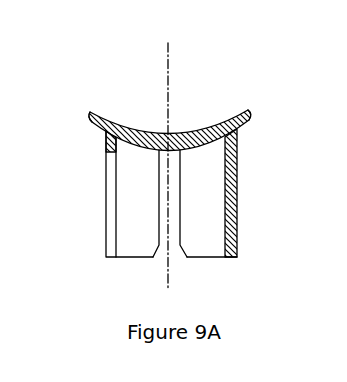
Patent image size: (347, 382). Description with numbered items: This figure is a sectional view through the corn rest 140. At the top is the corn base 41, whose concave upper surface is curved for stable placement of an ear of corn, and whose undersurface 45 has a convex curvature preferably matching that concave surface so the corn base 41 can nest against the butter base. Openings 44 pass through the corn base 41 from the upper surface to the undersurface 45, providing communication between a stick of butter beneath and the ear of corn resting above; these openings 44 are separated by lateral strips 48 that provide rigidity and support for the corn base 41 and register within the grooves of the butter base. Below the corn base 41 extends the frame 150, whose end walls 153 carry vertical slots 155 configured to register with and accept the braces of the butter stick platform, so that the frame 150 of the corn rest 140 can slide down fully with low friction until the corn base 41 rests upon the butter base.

The corn base 41 is at (78, 100).
The openings 44 is at (180, 147).
The undersurface 45 is at (132, 152).
The lateral strips 48 is at (132, 150).
The corn rest 140 is at (243, 87).
The frame 150 is at (257, 213).
The end walls 153 is at (207, 247).
The vertical slots 155 is at (106, 218).